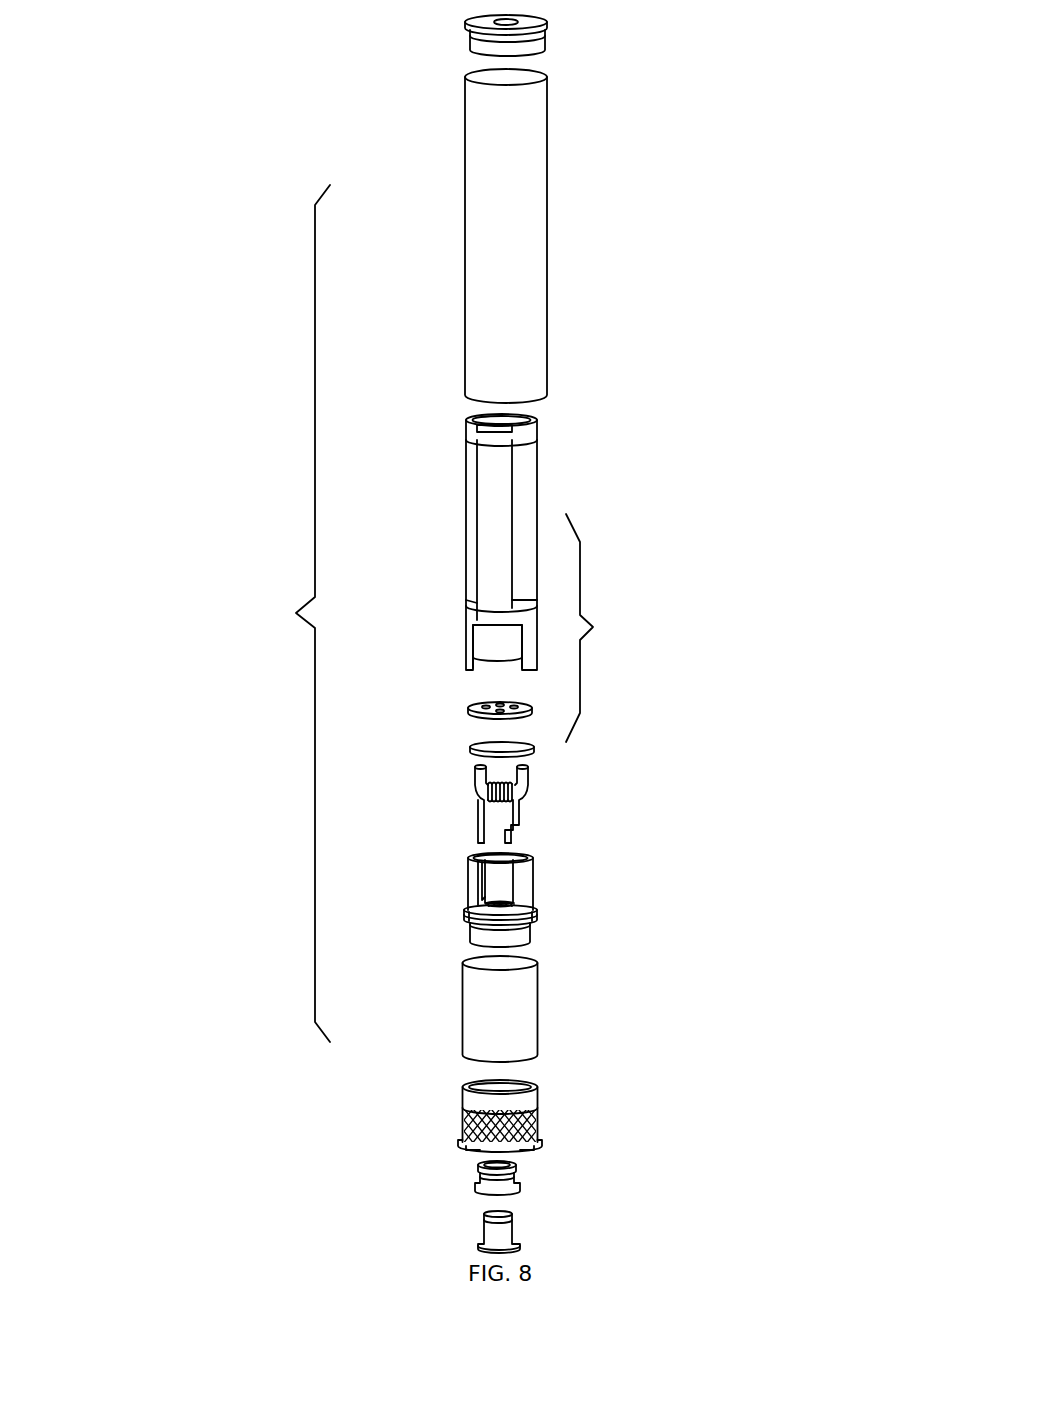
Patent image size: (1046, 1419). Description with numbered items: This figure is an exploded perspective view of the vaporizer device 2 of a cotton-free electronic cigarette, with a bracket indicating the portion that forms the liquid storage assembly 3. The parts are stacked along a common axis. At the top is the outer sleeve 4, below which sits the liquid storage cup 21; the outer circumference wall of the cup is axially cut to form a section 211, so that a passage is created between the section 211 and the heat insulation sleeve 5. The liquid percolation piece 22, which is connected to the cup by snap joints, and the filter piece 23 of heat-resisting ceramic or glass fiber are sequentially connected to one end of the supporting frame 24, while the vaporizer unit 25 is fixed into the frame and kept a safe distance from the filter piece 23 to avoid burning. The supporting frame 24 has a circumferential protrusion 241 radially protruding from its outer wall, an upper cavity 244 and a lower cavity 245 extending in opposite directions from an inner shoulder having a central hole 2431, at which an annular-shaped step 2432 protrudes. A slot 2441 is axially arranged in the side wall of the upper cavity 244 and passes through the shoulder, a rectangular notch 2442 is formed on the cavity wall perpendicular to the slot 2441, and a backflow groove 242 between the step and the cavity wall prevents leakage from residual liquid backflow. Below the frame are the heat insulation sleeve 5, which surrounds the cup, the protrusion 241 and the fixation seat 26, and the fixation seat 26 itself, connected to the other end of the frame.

The vaporizer device 2 is at (299, 613).
The liquid storage assembly 3 is at (593, 628).
The outer sleeve 4 is at (497, 235).
The heat insulation sleeve 5 is at (500, 1010).
The liquid storage cup 21 is at (450, 542).
The section 211 is at (492, 583).
The liquid percolation piece 22 is at (472, 712).
The filter piece 23 is at (470, 747).
The supporting frame 24 is at (504, 881).
The vaporizer unit 25 is at (487, 772).
The fixation seat 26 is at (462, 1118).
The circumferential protrusion 241 is at (470, 920).
The backflow groove 242 is at (472, 907).
The upper cavity 244 is at (504, 867).
The lower cavity 245 is at (523, 934).
The central hole 2431 is at (530, 908).
The annular-shaped step 2432 is at (483, 900).
The slot 2441 is at (531, 858).
The rectangular notch 2442 is at (480, 873).